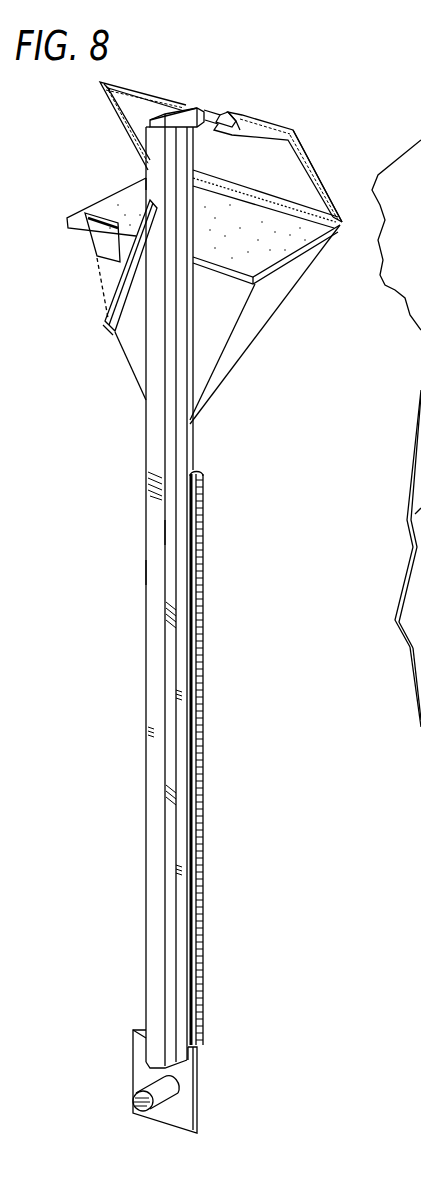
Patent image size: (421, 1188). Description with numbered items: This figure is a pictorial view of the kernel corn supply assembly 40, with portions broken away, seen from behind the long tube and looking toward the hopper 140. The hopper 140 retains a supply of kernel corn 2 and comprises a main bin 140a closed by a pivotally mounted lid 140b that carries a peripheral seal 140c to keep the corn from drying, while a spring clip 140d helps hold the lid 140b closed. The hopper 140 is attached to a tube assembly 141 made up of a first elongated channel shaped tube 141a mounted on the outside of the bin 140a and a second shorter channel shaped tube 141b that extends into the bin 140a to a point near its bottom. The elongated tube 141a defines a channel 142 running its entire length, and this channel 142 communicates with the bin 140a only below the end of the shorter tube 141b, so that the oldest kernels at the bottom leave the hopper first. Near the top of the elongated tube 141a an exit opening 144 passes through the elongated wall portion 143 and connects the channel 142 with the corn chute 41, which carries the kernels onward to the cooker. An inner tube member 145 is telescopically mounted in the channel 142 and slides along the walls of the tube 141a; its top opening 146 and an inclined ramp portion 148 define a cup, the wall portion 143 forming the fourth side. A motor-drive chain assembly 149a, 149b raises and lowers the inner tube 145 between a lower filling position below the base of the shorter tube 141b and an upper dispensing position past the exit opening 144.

The kernel corn 2 is at (322, 238).
The kernel corn supply assembly 40 is at (200, 30).
The corn chute 41 is at (105, 312).
The hopper 140 is at (233, 353).
The main bin 140a is at (214, 390).
The pivotally mounted lid 140b is at (250, 125).
The peripheral seal 140c is at (368, 132).
The spring clip 140d is at (100, 238).
The tube assembly 141 is at (193, 112).
The first elongated channel shaped tube 141a is at (155, 610).
The second shorter channel shaped tube 141b is at (420, 572).
The channel 142 is at (182, 738).
The elongated wall portion 143 is at (153, 532).
The exit opening 144 is at (150, 195).
The inner tube member 145 is at (157, 420).
The top opening 146 is at (193, 472).
The inclined ramp portion 148 is at (147, 570).
The motor-drive chain assembly 149a is at (132, 1106).
The motor-drive chain assembly 149b is at (194, 858).